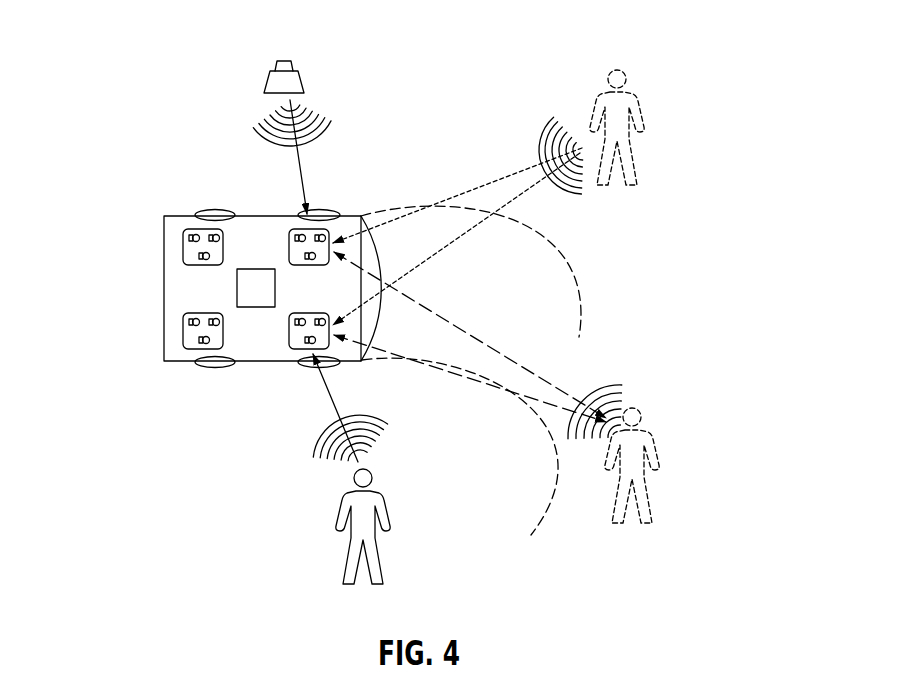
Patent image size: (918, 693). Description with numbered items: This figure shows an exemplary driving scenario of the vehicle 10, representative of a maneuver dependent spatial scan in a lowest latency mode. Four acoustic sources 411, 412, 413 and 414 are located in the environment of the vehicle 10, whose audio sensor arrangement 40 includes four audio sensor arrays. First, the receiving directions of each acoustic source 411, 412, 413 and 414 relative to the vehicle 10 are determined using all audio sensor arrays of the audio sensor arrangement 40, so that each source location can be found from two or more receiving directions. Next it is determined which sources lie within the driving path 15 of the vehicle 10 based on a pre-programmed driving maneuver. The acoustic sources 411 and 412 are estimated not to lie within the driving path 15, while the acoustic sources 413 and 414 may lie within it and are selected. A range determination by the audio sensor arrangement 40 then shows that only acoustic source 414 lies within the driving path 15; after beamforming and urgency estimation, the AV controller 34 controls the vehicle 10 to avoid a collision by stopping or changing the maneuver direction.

The vehicle 10 is at (186, 362).
The audio sensor arrangement 40 is at (187, 291).
The AV controller 34 is at (255, 288).
The driving path 15 is at (562, 287).
The acoustic source 411 is at (378, 556).
The acoustic source 412 is at (306, 82).
The acoustic source 413 is at (640, 163).
The acoustic source 414 is at (650, 500).